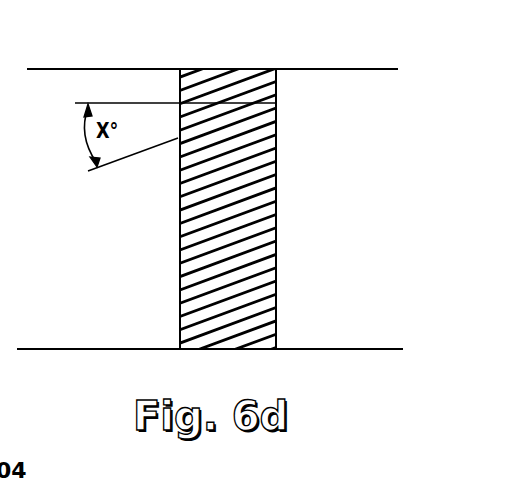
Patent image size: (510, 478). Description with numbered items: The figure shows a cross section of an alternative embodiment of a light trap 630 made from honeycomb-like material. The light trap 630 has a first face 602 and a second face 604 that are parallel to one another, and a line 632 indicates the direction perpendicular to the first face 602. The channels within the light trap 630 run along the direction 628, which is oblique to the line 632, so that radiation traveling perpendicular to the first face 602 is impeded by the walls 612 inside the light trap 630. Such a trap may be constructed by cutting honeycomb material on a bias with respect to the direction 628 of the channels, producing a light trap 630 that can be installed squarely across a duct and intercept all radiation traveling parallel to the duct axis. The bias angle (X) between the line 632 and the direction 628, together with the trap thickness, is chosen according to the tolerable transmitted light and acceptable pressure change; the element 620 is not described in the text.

The first face 602 is at (277, 275).
The second face 604 is at (178, 272).
The walls 612 is at (262, 157).
The substrate layer 620 is at (117, 349).
The direction of the channels 628 is at (138, 158).
The light trap 630 is at (263, 322).
The line 632 is at (150, 103).